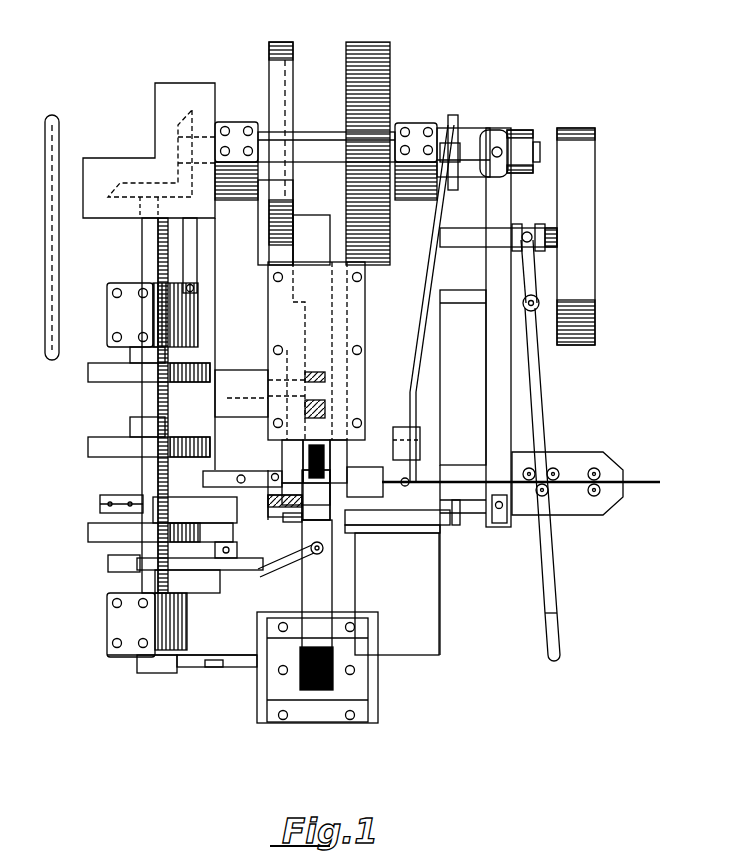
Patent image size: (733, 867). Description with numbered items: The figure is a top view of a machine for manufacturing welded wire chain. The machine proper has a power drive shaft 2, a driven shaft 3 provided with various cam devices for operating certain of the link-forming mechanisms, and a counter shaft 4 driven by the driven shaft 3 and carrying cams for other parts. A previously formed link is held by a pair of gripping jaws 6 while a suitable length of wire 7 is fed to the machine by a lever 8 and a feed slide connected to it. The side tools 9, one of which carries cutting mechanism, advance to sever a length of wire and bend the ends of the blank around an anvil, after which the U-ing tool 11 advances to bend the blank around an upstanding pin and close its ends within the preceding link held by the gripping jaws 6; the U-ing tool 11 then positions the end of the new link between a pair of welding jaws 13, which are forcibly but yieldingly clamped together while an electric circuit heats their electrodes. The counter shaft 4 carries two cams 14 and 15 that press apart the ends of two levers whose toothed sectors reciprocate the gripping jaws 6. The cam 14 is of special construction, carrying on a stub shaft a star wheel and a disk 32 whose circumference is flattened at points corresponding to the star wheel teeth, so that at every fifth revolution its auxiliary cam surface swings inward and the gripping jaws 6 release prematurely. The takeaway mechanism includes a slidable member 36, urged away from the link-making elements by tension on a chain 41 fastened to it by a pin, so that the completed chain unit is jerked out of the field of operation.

The power drive shaft 2 is at (545, 232).
The driven shaft 3 is at (540, 142).
The counter shaft 4 is at (142, 400).
The gripping jaws 6 is at (283, 511).
The wire 7 is at (650, 480).
The lever 8 is at (490, 424).
The side tools 9 is at (283, 470).
The U-ing tool 11 is at (297, 458).
The welding jaws 13 is at (330, 528).
The cam 14 is at (102, 502).
The cam 15 is at (98, 542).
The disk 32 is at (224, 471).
The member 36 is at (396, 511).
The chain 41 is at (453, 526).